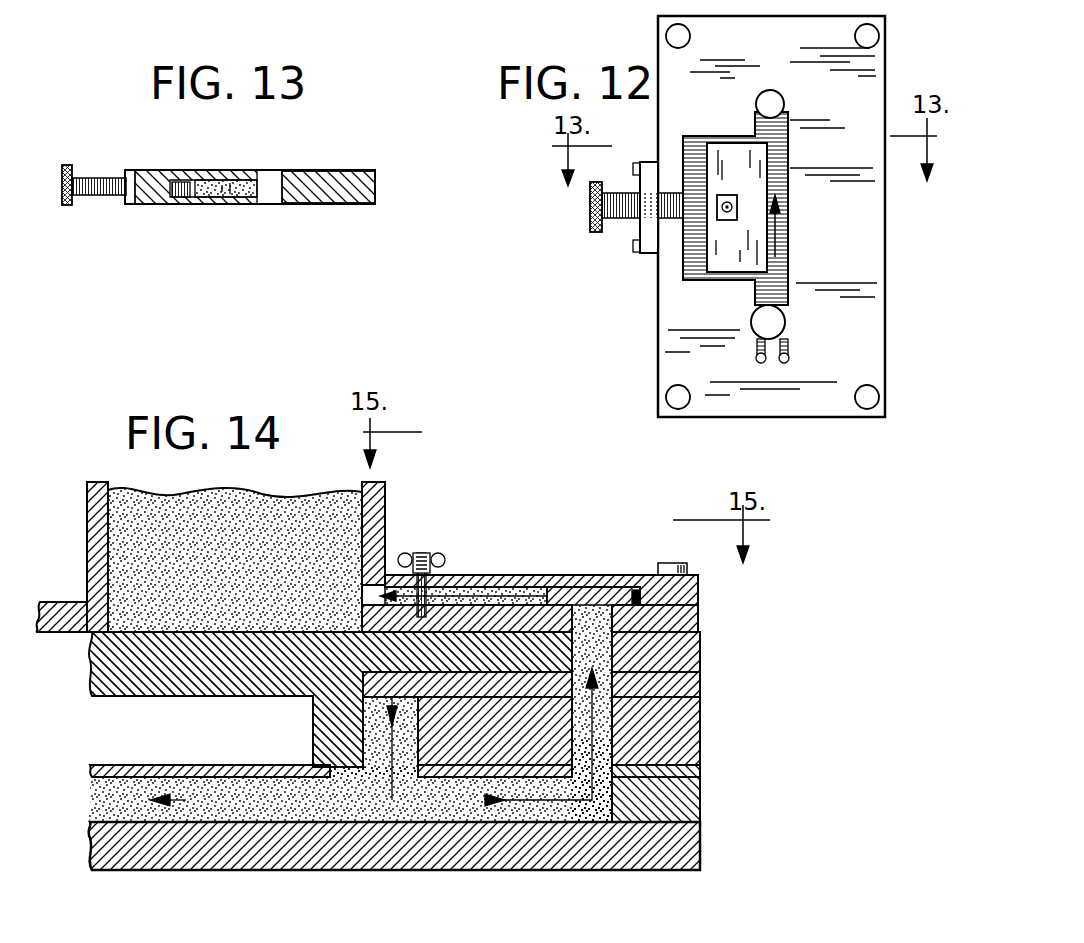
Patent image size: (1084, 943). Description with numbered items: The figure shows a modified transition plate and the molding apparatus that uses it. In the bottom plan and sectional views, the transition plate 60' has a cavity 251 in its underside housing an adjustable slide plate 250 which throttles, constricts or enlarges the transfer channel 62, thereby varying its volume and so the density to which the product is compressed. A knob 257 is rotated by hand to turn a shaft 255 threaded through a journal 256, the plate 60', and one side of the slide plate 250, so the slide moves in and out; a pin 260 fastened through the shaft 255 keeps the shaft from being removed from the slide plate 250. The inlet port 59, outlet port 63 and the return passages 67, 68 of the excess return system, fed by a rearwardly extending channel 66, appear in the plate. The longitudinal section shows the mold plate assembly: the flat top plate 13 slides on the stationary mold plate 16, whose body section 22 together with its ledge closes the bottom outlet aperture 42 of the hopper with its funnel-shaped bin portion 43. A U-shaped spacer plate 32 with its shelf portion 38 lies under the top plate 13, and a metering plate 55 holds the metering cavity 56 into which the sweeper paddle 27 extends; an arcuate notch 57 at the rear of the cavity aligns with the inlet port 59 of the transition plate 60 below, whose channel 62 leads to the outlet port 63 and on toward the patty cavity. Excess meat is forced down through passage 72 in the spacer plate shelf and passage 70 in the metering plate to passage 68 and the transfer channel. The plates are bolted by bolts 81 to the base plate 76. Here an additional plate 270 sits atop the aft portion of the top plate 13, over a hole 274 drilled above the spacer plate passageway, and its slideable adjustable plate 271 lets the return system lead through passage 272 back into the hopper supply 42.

In FIG. 14, the flat top plate 13 is at (700, 626).
In FIG. 14, the stationary mold plate 16 is at (160, 700).
In FIG. 14, the body section 22 is at (215, 630).
In FIG. 14, the sweeper paddle 27 is at (335, 722).
In FIG. 14, the U-shaped spacer plate 32 is at (700, 662).
In FIG. 14, the shelf portion 38 is at (495, 660).
In FIG. 14, the bottom outlet aperture 42 is at (290, 572).
In FIG. 14, the bin portion 43 is at (382, 488).
In FIG. 14, the metering plate 55 is at (700, 712).
In FIG. 14, the metering cavity 56 is at (197, 742).
In FIG. 14, the arcuate notch 57 is at (418, 733).
In FIG. 12, the inlet port 59 is at (778, 322).
In FIG. 14, the inlet port 59 is at (403, 788).
In FIG. 14, the transition plate 60 is at (702, 801).
In FIG. 13, the modified transition plate 60' is at (274, 156).
In FIG. 12, the modified transition plate 60' is at (806, 216).
In FIG. 13, the transfer channel 62 is at (278, 198).
In FIG. 12, the transfer channel 62 is at (786, 215).
In FIG. 14, the transfer channel 62 is at (230, 805).
In FIG. 12, the outlet port 63 is at (782, 104).
In FIG. 14, the rearwardly extending channel 66 is at (550, 805).
In FIG. 12, the passage 67 is at (784, 364).
In FIG. 12, the passage 68 is at (760, 364).
In FIG. 14, the passage 68 is at (605, 780).
In FIG. 14, the passage 70 is at (605, 738).
In FIG. 14, the passage 72 is at (600, 677).
In FIG. 14, the base plate 76 is at (700, 842).
In FIG. 14, the bolts 81 is at (680, 563).
In FIG. 13, the adjustable slide plate 250 is at (240, 199).
In FIG. 12, the adjustable slide plate 250 is at (740, 160).
In FIG. 13, the cavity 251 is at (182, 198).
In FIG. 12, the cavity 251 is at (695, 145).
In FIG. 13, the shaft 255 is at (106, 178).
In FIG. 12, the shaft 255 is at (615, 222).
In FIG. 13, the journal 256 is at (131, 170).
In FIG. 12, the journal 256 is at (640, 227).
In FIG. 13, the knob 257 is at (68, 165).
In FIG. 12, the knob 257 is at (590, 200).
In FIG. 13, the pin 260 is at (215, 200).
In FIG. 12, the pin 260 is at (727, 222).
In FIG. 14, the plate 270 is at (528, 575).
In FIG. 14, the slideable adjustable plate 271 is at (598, 600).
In FIG. 14, the passage 272 is at (445, 588).
In FIG. 14, the hole 274 is at (700, 612).